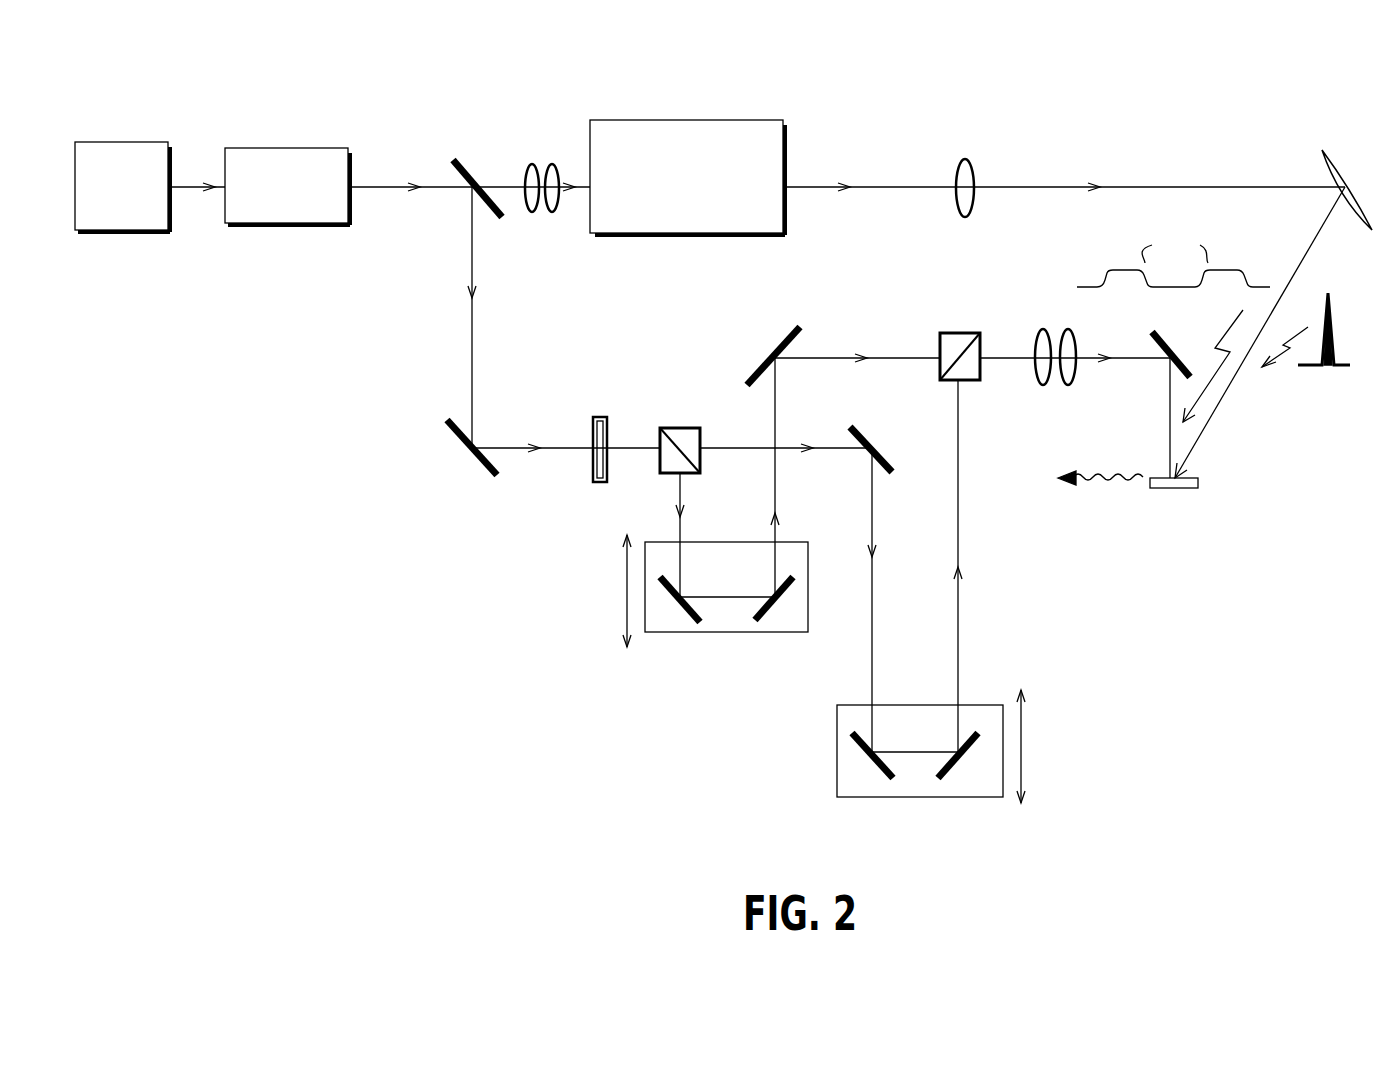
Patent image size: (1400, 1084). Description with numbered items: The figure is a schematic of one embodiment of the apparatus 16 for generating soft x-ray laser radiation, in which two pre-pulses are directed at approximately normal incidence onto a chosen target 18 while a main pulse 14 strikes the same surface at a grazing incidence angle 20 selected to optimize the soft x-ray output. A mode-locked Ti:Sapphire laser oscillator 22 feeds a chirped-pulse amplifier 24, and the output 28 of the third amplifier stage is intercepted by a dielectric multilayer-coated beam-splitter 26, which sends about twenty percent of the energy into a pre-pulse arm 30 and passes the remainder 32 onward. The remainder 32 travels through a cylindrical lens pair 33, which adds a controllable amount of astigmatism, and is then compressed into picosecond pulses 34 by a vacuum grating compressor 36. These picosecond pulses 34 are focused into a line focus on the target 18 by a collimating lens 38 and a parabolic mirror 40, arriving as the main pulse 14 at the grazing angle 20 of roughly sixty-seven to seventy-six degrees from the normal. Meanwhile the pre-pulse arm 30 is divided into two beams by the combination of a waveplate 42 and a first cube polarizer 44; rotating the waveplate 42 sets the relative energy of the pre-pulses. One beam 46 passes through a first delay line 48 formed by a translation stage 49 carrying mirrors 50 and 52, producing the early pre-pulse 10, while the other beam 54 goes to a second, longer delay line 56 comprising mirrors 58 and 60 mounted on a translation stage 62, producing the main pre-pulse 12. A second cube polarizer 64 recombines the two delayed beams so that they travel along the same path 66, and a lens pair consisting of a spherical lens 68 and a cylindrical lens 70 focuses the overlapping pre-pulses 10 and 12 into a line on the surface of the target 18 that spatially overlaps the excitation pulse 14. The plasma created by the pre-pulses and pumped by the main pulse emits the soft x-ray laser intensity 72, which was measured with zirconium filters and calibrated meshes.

The first pre-pulse 10 is at (1110, 270).
The second pre-pulse 12 is at (1240, 273).
The main pulse 14 is at (1330, 328).
The apparatus 16 is at (338, 588).
The target 18 is at (1176, 439).
The grazing incidence angle 20 is at (1190, 430).
The mode-locked laser oscillator 22 is at (260, 282).
The amplifier 24 is at (363, 239).
The beam-splitter 26 is at (498, 170).
The output 28 is at (443, 190).
The pre-pulse arm 30 is at (472, 362).
The remainder 32 is at (502, 192).
The lens pair 33 is at (551, 167).
The picosecond pulses 34 is at (907, 187).
The vacuum grating compressor 36 is at (724, 118).
The collimating lens 38 is at (972, 170).
The parabolic mirror 40 is at (1329, 153).
The waveplate 42 is at (600, 483).
The first cube polarizer 44 is at (677, 428).
The beam 46 is at (678, 498).
The first delay line 48 is at (646, 538).
The translation stage 49 is at (793, 635).
The mirror 50 is at (665, 595).
The mirror 52 is at (773, 612).
The beam 54 is at (733, 450).
The second delay line 56 is at (992, 625).
The mirror 58 is at (880, 770).
The mirror 60 is at (955, 770).
The translation stage 62 is at (835, 737).
The second cube polarizer 64 is at (884, 320).
The path 66 is at (1022, 360).
The spherical lens 68 is at (1040, 384).
The cylindrical lens 70 is at (1078, 366).
The soft x-ray laser intensity 72 is at (1097, 487).